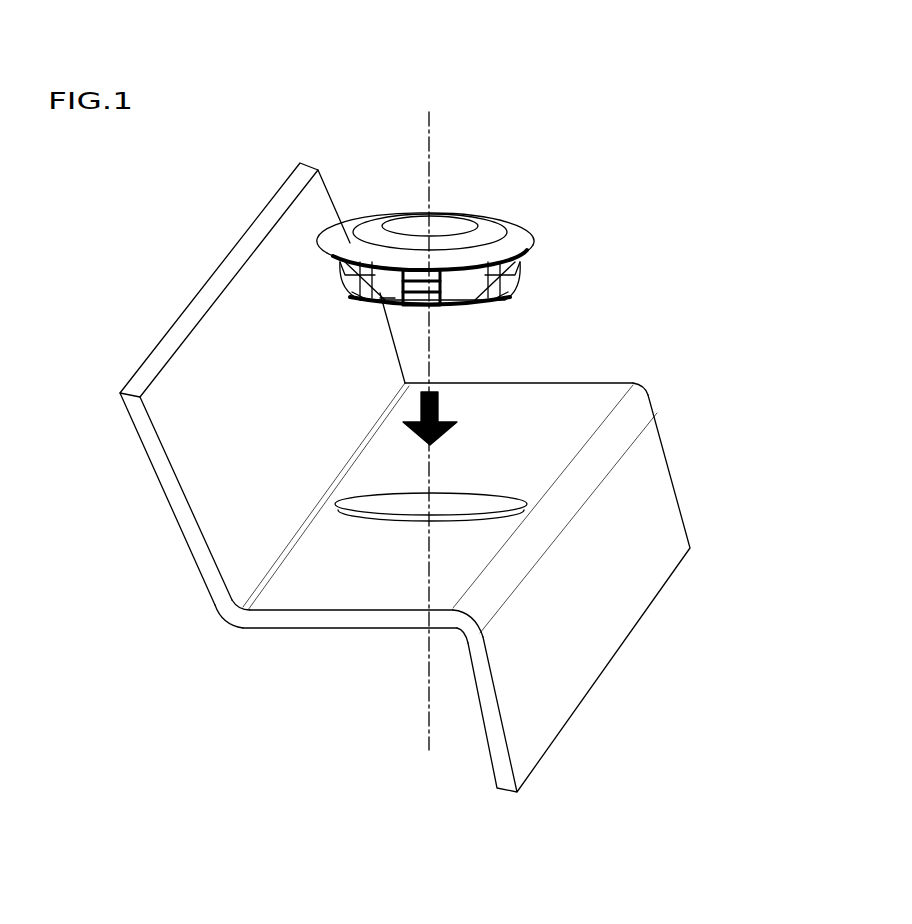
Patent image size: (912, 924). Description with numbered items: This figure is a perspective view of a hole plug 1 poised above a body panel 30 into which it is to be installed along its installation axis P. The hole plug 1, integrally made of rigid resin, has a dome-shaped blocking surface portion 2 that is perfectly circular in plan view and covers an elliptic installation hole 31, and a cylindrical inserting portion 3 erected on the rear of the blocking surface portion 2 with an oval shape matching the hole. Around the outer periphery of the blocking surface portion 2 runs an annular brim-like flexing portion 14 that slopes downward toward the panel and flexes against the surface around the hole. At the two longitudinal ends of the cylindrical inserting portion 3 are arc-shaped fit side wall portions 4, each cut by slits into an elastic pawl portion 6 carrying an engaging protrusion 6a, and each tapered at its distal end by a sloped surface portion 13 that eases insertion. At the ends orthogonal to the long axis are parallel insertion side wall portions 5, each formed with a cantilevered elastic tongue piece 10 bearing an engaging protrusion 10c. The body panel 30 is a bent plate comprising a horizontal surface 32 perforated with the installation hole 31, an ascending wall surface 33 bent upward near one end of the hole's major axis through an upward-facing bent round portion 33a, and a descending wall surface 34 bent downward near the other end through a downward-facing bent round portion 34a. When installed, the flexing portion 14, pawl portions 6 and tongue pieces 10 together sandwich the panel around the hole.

The hole plug 1 is at (556, 188).
The blocking surface portion 2 is at (455, 215).
The cylindrical inserting portion 3 is at (477, 300).
The fit side wall portion 4 is at (340, 292).
The insertion side wall portion 5 is at (388, 303).
The elastic pawl portion 6 is at (340, 282).
The engaging protrusion 6a is at (333, 268).
The elastic tongue piece 10 is at (462, 294).
The engaging protrusion 10c is at (398, 306).
The sloped surface portion 13 is at (345, 303).
The brim-like flexing portion 14 is at (527, 238).
The body panel 30 is at (601, 367).
The installation hole 31 is at (337, 512).
The horizontal surface 32 is at (387, 593).
The ascending wall surface 33 is at (207, 480).
The bent round portion 33a is at (233, 628).
The descending wall surface 34 is at (557, 693).
The bent round portion 34a is at (650, 387).
The installation axis P is at (429, 130).